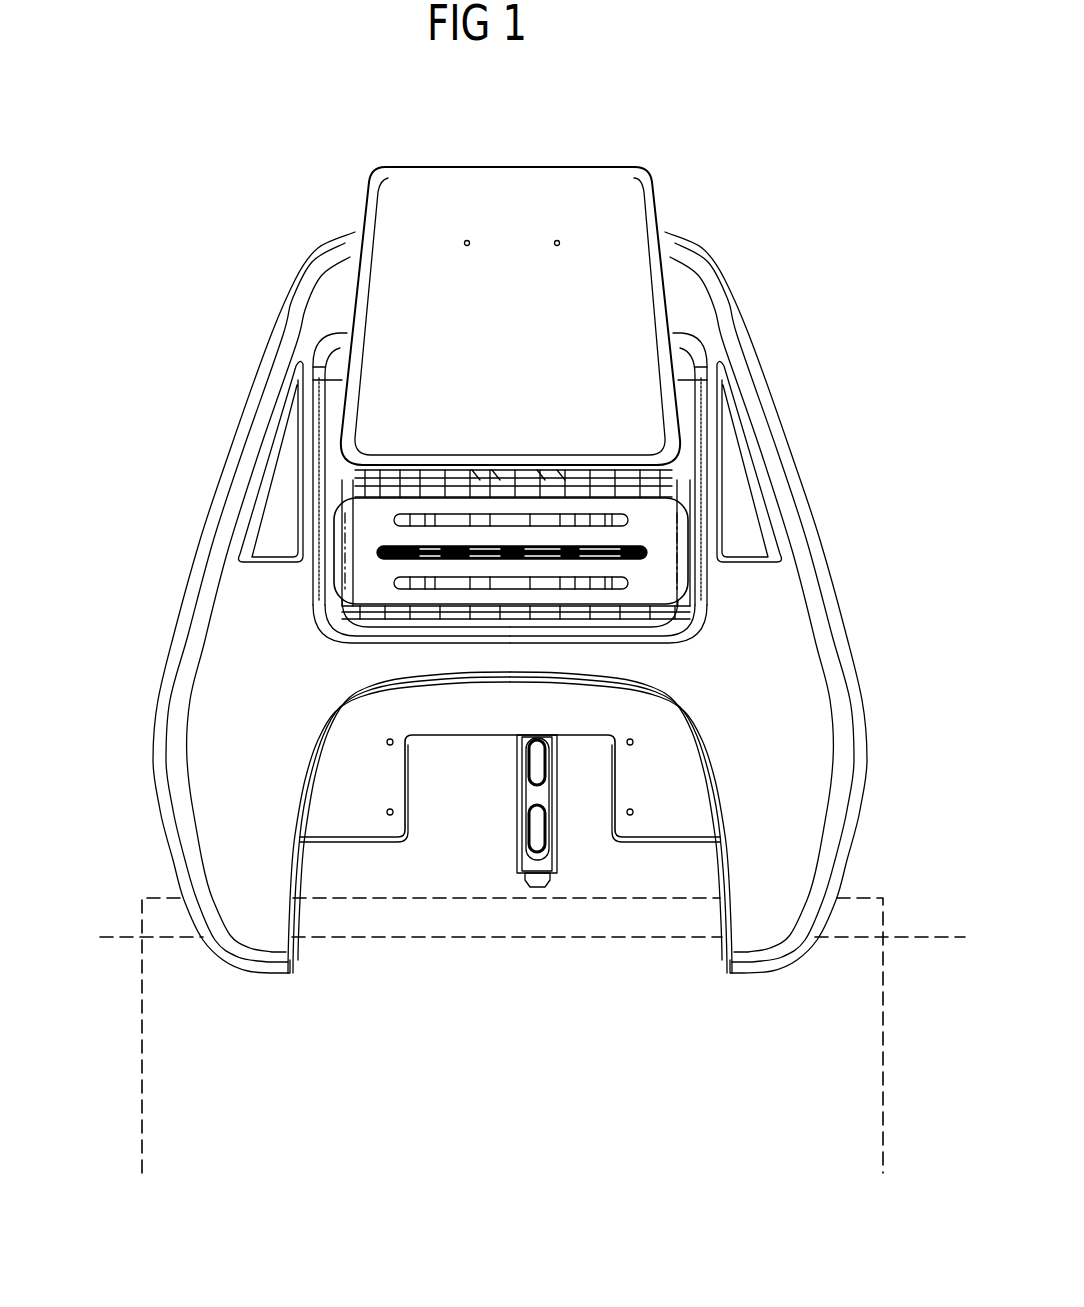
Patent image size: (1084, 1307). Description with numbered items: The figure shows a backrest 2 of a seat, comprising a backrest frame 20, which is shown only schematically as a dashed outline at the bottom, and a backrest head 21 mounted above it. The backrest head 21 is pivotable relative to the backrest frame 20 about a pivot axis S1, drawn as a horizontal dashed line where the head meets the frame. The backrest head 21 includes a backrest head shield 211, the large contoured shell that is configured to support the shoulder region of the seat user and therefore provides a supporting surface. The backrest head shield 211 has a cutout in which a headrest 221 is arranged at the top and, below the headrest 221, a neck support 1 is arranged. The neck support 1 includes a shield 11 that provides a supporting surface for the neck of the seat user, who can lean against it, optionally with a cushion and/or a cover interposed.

The neck support 1 is at (688, 577).
The shield 11 is at (643, 578).
The backrest 2 is at (207, 320).
The backrest frame 20 is at (142, 1047).
The backrest head 21 is at (158, 667).
The backrest head shield 211 is at (200, 770).
The headrest 221 is at (605, 237).
The pivot axis S1 is at (925, 937).